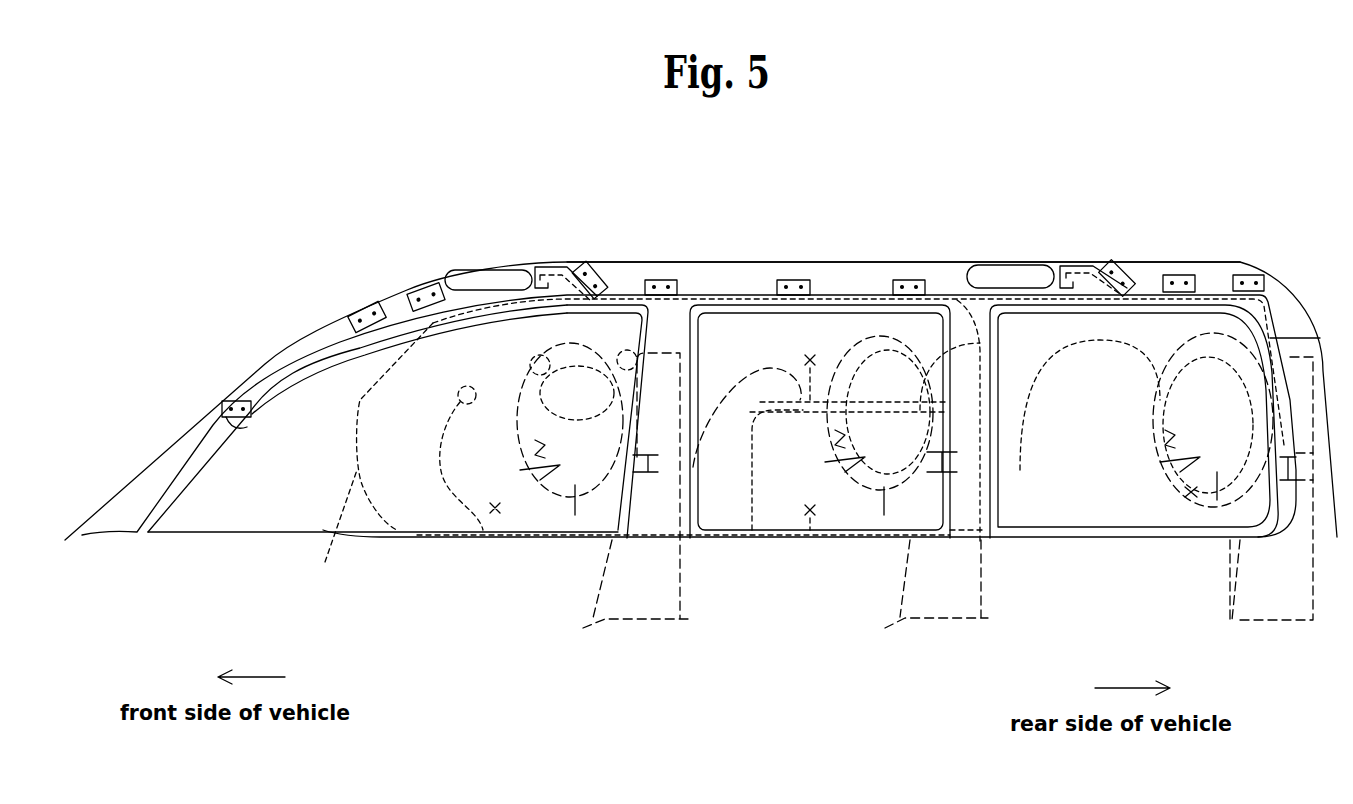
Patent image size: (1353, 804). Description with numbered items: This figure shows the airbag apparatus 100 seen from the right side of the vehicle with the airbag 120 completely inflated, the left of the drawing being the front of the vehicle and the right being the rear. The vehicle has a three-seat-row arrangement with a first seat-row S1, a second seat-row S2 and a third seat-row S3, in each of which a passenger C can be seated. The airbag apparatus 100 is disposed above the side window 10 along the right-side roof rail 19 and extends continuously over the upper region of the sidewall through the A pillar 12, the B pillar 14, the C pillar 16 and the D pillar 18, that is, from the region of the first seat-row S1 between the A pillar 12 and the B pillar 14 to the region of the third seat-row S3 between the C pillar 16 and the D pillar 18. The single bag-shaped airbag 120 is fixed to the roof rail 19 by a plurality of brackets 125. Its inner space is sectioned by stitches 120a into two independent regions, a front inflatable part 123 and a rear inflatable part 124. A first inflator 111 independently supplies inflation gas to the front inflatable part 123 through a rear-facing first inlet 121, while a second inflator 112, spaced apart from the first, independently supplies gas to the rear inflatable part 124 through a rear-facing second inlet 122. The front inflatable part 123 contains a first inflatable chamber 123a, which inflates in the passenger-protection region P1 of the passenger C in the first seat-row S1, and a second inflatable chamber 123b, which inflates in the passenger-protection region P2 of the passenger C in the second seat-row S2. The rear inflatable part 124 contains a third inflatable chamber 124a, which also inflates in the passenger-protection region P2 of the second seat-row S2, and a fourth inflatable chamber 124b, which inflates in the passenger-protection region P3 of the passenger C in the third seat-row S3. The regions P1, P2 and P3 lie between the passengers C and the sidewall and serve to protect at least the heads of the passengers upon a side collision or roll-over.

The side window 10 is at (243, 505).
The A pillar 12 is at (278, 360).
The B pillar 14 is at (680, 320).
The C pillar 16 is at (968, 305).
The D pillar 18 is at (1290, 313).
The roof rail 19 is at (752, 252).
The airbag apparatus 100 is at (935, 278).
The first inflator 111 is at (490, 275).
The second inflator 112 is at (1027, 275).
The airbag 120 is at (776, 291).
The stitches 120a is at (327, 534).
The first inlet 121 is at (550, 265).
The second inlet 122 is at (1080, 264).
The front inflatable part 123 is at (417, 540).
The first inflatable chamber 123a is at (494, 515).
The second inflatable chamber 123b is at (762, 545).
The rear inflatable part 124 is at (1008, 475).
The third inflatable chamber 124a is at (803, 545).
The fourth inflatable chamber 124b is at (1190, 540).
The brackets 125 is at (233, 400).
The passenger C is at (548, 495).
The passenger-protection region P1 is at (578, 540).
The passenger-protection region P2 is at (882, 545).
The passenger-protection region P3 is at (1216, 540).
The first seat-row S1 is at (635, 598).
The second seat-row S2 is at (937, 598).
The third seat-row S3 is at (1255, 600).